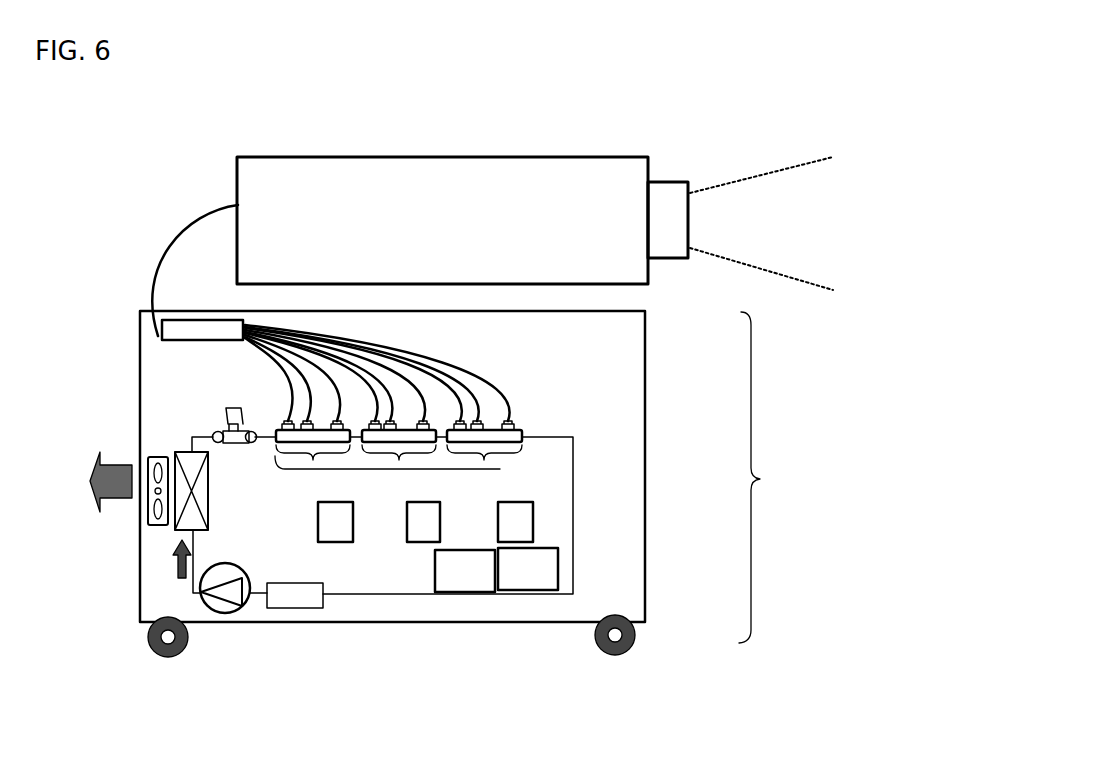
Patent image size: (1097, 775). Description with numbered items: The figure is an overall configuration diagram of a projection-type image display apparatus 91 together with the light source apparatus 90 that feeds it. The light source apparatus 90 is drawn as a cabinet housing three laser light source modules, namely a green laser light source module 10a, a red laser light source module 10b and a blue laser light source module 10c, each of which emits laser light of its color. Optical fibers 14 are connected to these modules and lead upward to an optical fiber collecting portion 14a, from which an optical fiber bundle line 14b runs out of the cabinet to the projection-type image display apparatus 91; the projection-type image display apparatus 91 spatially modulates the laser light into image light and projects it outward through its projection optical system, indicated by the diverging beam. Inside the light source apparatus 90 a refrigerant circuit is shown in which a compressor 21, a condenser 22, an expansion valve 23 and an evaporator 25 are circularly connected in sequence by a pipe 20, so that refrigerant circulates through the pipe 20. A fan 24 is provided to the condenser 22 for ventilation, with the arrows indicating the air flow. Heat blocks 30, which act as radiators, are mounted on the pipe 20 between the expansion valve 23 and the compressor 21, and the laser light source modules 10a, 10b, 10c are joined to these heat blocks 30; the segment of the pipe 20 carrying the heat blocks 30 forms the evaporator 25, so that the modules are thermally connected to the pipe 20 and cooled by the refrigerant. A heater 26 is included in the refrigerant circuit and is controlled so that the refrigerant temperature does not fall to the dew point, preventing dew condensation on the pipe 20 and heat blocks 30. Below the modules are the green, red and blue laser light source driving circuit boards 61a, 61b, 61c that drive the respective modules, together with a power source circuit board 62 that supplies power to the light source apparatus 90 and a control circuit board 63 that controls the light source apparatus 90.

The projection-type image display apparatus 91 is at (400, 177).
The light source apparatus 90 is at (470, 484).
The optical fibers 14 is at (510, 380).
The optical fiber collecting portion 14a is at (177, 335).
The optical fiber bundle line 14b is at (197, 226).
The pipe 20 is at (192, 436).
The compressor 21 is at (203, 597).
The condenser 22 is at (173, 524).
The expansion valve 23 is at (227, 407).
The fan 24 is at (150, 490).
The evaporator 25 is at (399, 470).
The heater 26 is at (298, 598).
The heat blocks 30 is at (454, 566).
The green laser light source module 10a is at (312, 452).
The red laser light source module 10b is at (378, 458).
The blue laser light source module 10c is at (484, 461).
The green laser light source driving circuit board 61a is at (341, 521).
The red laser light source driving circuit board 61b is at (425, 523).
The blue laser light source driving circuit board 61c is at (518, 519).
The power source circuit board 62 is at (522, 577).
The control circuit board 63 is at (457, 573).